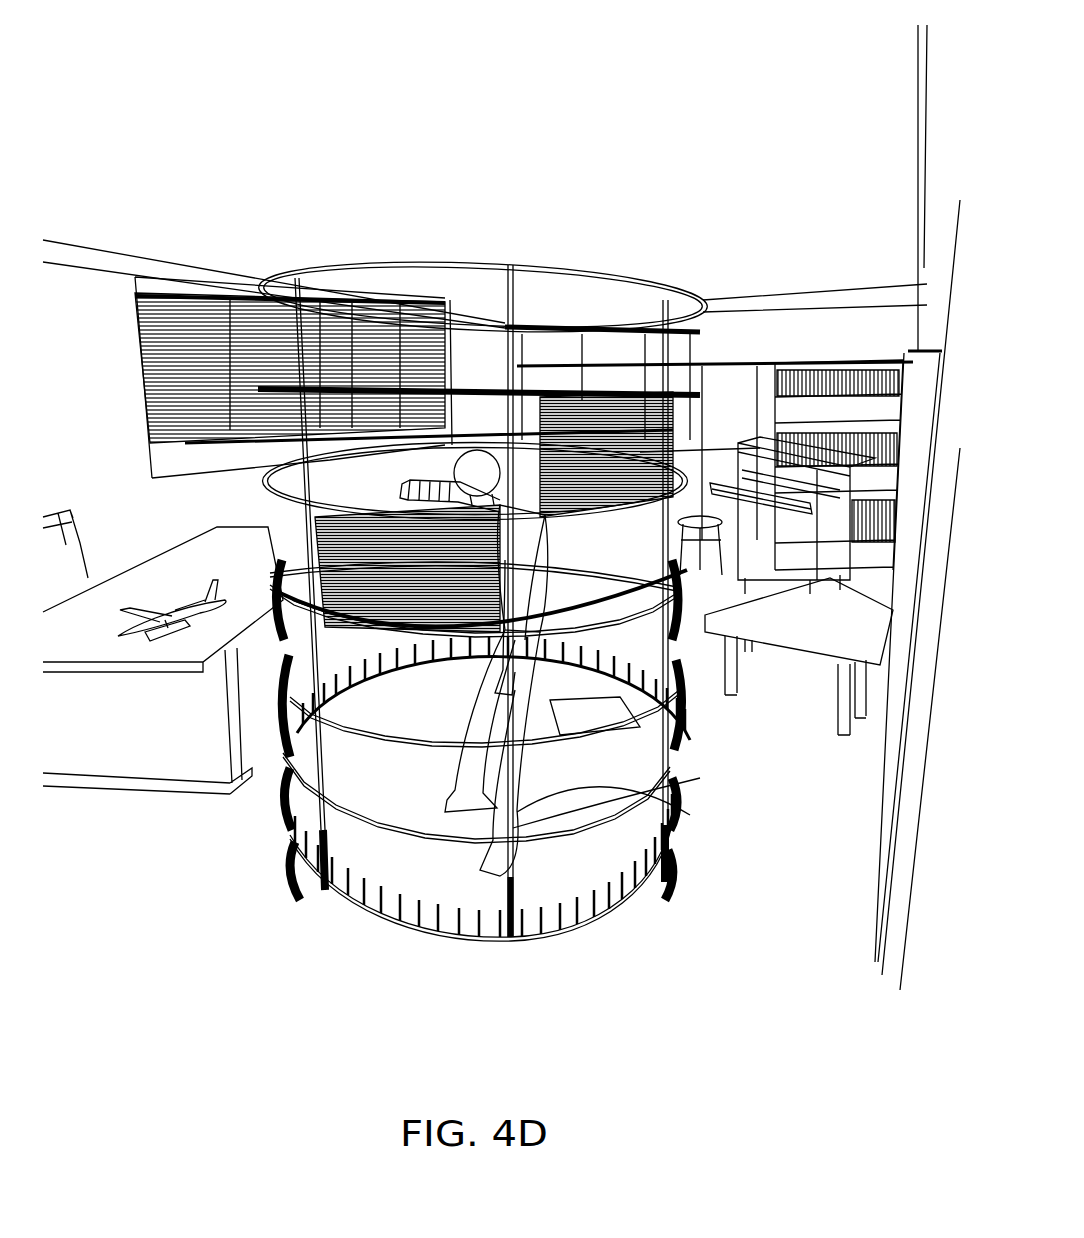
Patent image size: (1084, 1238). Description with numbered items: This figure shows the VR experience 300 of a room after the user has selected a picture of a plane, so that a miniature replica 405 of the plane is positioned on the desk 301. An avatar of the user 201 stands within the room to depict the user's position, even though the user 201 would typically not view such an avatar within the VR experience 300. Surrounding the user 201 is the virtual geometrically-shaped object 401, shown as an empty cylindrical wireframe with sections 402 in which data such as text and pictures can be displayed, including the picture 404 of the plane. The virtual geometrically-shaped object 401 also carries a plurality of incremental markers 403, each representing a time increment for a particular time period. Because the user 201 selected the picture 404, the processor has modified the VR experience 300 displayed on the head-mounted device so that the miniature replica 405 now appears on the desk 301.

The VR experience 300 is at (795, 222).
The desk 301 is at (83, 643).
The user 201 is at (455, 462).
The virtual geometrically-shaped object 401 is at (437, 263).
The sections 402 is at (677, 724).
The incremental markers 403 is at (500, 903).
The picture 404 is at (277, 557).
The miniature replica 405 is at (160, 612).